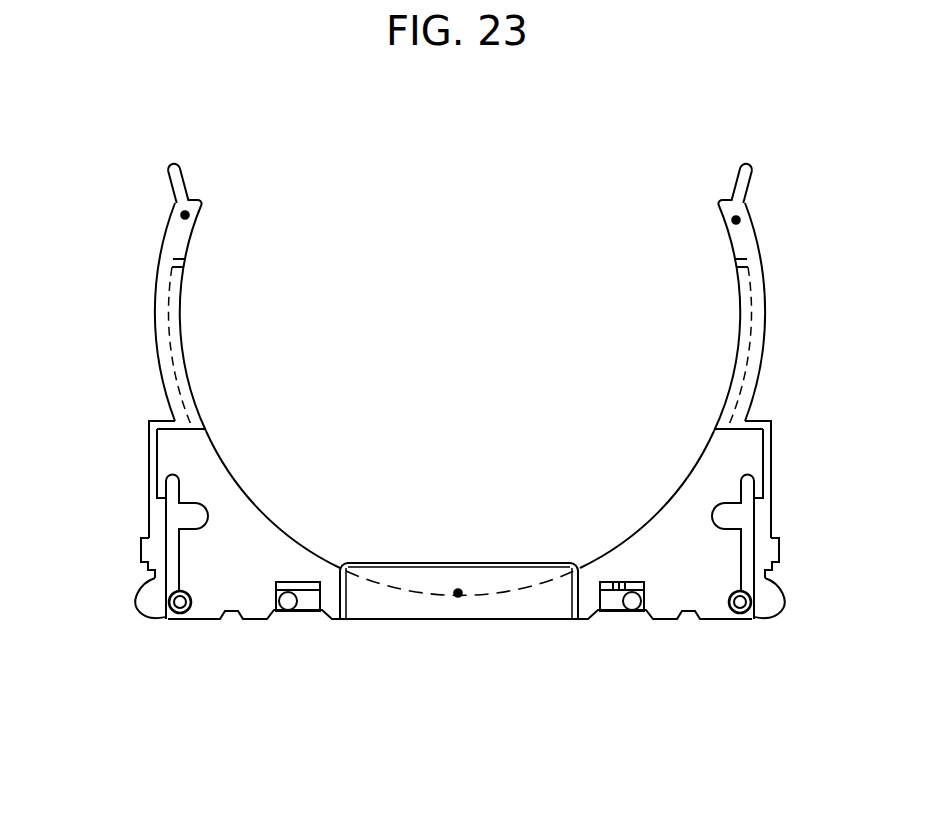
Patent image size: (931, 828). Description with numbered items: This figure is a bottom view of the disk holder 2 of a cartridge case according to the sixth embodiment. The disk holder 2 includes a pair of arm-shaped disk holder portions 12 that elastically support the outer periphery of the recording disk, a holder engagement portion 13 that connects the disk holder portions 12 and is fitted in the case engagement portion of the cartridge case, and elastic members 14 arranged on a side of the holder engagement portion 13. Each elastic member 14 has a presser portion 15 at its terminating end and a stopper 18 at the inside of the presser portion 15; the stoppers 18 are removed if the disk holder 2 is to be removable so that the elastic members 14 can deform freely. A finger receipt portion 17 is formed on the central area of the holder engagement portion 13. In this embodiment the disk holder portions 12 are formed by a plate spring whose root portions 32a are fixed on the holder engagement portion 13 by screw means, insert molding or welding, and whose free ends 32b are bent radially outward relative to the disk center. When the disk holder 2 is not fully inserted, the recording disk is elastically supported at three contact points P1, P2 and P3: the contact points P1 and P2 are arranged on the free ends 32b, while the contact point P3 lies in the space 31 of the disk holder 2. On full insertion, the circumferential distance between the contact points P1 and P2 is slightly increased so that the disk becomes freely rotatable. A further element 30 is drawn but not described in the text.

The disk holder 2 is at (258, 610).
The disk holder portion 12 is at (157, 300).
The holder engagement portion 13 is at (668, 612).
The elastic member 14 is at (148, 548).
The presser portion 15 is at (141, 598).
The finger receipt portion 17 is at (403, 612).
The stopper 18 is at (178, 614).
The elastic arm 30 is at (175, 513).
The space 31 is at (518, 587).
The root portion 32a is at (150, 440).
The free end 32b is at (171, 181).
The contact point P1 is at (185, 215).
The contact point P2 is at (736, 220).
The contact point P3 is at (458, 593).